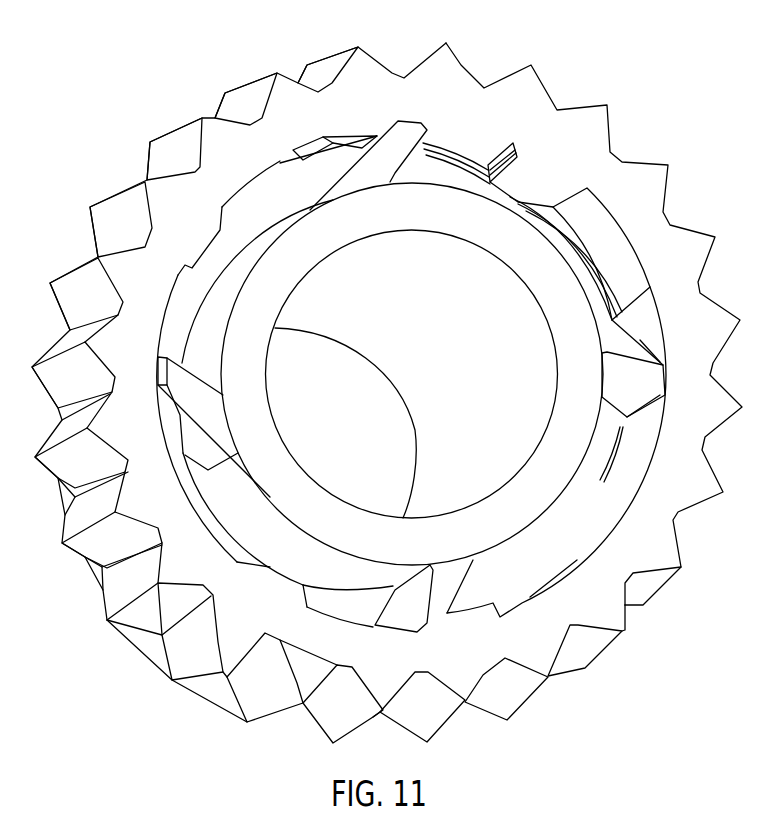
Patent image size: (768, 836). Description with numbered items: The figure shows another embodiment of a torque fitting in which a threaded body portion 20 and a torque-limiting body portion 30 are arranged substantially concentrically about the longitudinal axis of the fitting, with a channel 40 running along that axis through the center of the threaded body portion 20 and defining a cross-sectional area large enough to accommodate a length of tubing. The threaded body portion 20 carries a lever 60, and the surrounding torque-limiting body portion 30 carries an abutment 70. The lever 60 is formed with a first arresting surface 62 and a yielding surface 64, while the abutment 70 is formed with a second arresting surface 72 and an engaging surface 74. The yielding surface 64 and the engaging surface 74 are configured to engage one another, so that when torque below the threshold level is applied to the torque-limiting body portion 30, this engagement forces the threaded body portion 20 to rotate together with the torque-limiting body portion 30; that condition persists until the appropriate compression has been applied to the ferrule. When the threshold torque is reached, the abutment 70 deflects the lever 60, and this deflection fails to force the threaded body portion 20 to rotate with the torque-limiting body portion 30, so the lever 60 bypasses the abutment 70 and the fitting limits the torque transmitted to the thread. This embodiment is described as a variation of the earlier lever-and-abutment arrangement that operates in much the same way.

The threaded body portion 20 is at (278, 270).
The torque-limiting body portion 30 is at (215, 140).
The channel 40 is at (355, 477).
The lever 60 is at (417, 125).
The first arresting surface 62 is at (633, 400).
The yielding surface 64 is at (377, 140).
The abutment 70 is at (614, 515).
The second arresting surface 72 is at (519, 147).
The engaging surface 74 is at (561, 190).